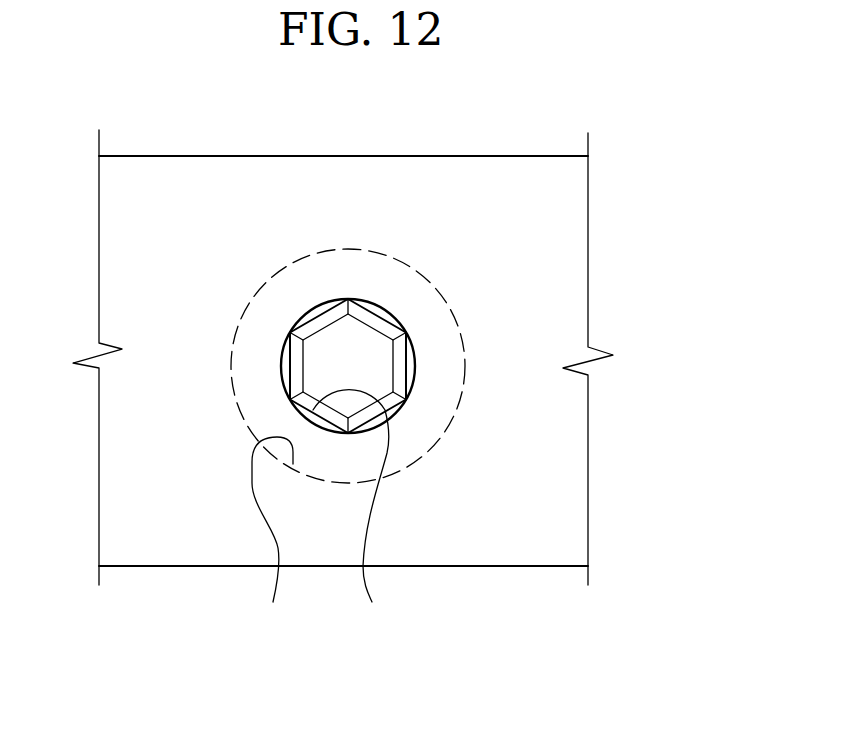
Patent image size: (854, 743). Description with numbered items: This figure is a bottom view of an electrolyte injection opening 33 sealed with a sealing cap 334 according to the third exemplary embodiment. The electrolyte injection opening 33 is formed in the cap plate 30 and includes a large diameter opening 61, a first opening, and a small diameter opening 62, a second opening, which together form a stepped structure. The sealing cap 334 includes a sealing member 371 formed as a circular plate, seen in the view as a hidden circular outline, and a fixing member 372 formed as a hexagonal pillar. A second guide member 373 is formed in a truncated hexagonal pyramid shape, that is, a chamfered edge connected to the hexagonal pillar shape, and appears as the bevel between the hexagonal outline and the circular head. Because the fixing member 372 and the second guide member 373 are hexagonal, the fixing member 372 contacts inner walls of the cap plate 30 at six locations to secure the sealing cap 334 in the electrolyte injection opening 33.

The cap plate 30 is at (180, 545).
The electrolyte injection opening 33 is at (320, 534).
The large diameter opening 61 is at (272, 536).
The small diameter opening 62 is at (351, 512).
The sealing cap 334 is at (488, 366).
The sealing member 371 is at (452, 424).
The fixing member 372 is at (400, 365).
The second guide member 373 is at (398, 310).